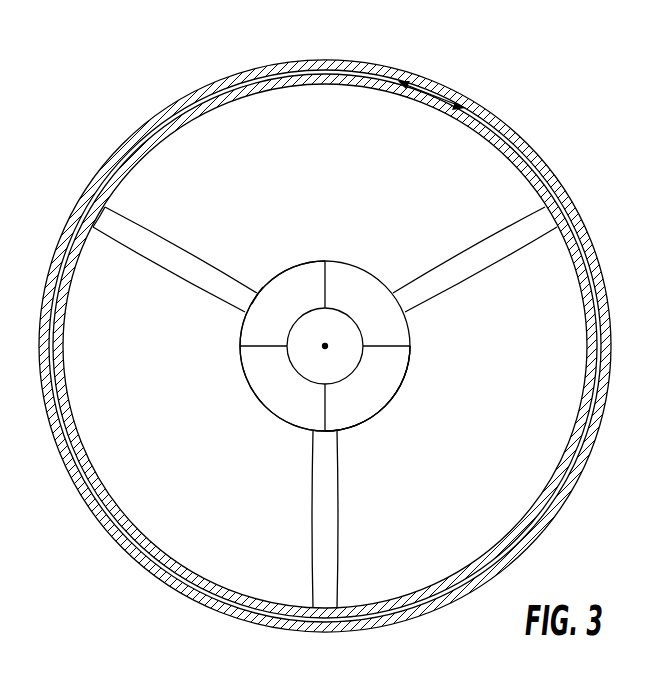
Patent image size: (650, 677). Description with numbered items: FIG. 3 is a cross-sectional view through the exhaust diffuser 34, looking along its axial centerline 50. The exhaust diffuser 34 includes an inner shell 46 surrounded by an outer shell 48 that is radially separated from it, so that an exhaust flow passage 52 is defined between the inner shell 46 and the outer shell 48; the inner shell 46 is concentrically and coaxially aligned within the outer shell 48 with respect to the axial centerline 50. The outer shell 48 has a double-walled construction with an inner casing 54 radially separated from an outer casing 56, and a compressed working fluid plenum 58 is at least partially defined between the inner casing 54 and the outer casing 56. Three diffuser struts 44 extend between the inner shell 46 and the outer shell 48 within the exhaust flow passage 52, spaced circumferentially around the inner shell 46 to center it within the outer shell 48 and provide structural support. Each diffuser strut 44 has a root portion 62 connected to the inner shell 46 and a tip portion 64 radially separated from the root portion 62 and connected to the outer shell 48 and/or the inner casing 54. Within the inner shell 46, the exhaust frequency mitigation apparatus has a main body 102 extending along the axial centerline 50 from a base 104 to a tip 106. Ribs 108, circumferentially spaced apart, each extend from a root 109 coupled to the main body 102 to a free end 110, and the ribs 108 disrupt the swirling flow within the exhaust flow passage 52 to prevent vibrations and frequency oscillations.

The exhaust diffuser 34 is at (114, 90).
The diffuser struts 44 is at (180, 280).
The inner shell 46 is at (239, 332).
The outer shell 48 is at (491, 105).
The axial centerline 50 is at (325, 346).
The exhaust flow passage 52 is at (233, 196).
The inner casing 54 is at (402, 98).
The outer casing 56 is at (346, 60).
The compressed working fluid plenum 58 is at (441, 93).
The root portion 62 is at (257, 292).
The tip portion 64 is at (105, 207).
The main body 102 is at (283, 297).
The base 104 is at (259, 402).
The tip 106 is at (358, 363).
The ribs 108 is at (322, 286).
The root 109 is at (325, 385).
The free end 110 is at (326, 262).